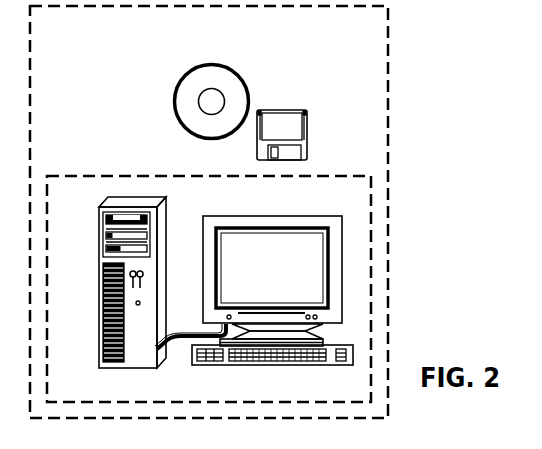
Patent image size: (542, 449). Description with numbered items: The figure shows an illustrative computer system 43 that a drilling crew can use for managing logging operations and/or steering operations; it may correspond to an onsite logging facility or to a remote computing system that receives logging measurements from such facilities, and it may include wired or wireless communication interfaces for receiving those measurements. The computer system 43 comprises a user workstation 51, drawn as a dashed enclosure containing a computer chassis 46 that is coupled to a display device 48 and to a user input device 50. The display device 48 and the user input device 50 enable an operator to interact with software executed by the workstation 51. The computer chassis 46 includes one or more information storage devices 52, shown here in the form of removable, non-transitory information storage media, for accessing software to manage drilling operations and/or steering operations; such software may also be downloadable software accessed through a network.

The computer system 43 is at (375, 46).
The user workstation 51 is at (88, 218).
The information storage devices 52 is at (268, 110).
The computer chassis 46 is at (164, 296).
The display device 48 is at (330, 323).
The user input device 50 is at (333, 366).